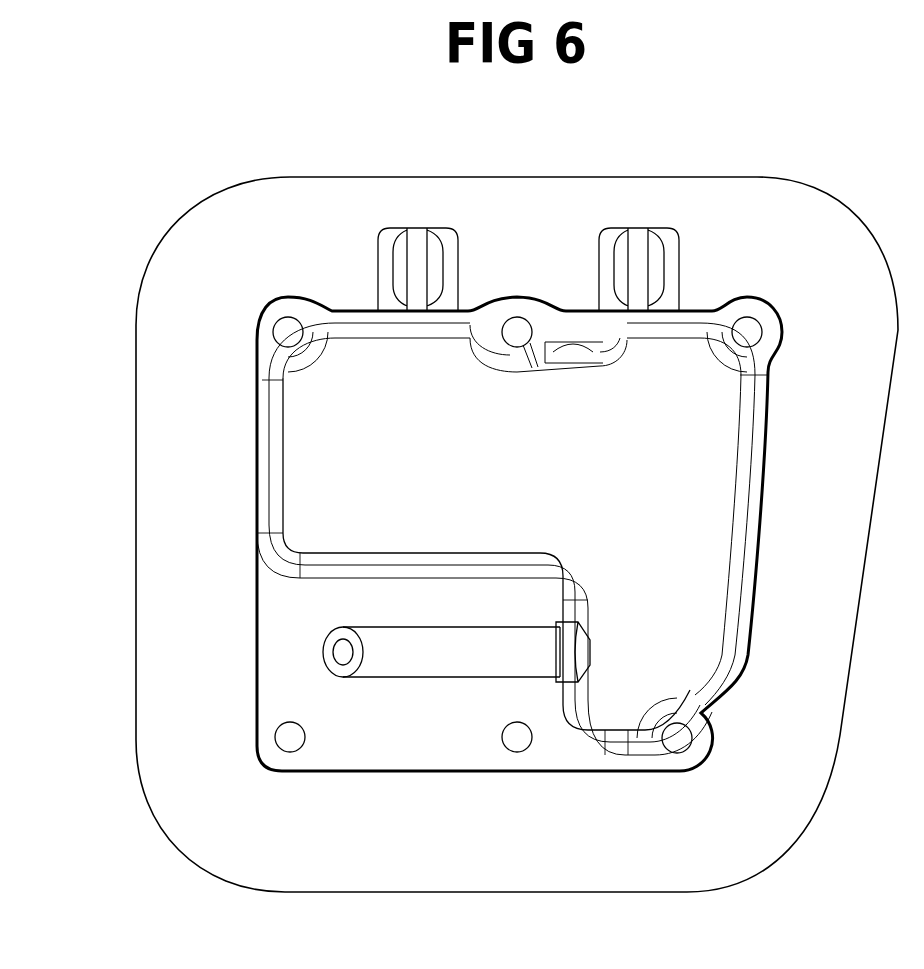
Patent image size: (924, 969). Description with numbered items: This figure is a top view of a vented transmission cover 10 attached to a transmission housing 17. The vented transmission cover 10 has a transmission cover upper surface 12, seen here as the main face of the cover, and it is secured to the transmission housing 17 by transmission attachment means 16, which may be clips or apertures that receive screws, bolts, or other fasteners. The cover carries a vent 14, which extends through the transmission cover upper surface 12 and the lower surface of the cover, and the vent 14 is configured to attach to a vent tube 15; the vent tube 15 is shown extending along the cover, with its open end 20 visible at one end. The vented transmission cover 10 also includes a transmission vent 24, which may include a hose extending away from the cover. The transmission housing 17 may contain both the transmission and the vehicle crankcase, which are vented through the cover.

The vented transmission cover 10 is at (718, 318).
The transmission cover upper surface 12 is at (484, 566).
The vent 14 is at (575, 677).
The vent tube 15 is at (438, 678).
The transmission attachment means 16 is at (272, 725).
The transmission housing 17 is at (502, 785).
The bore 20 is at (338, 662).
The transmission vent 24 is at (573, 343).